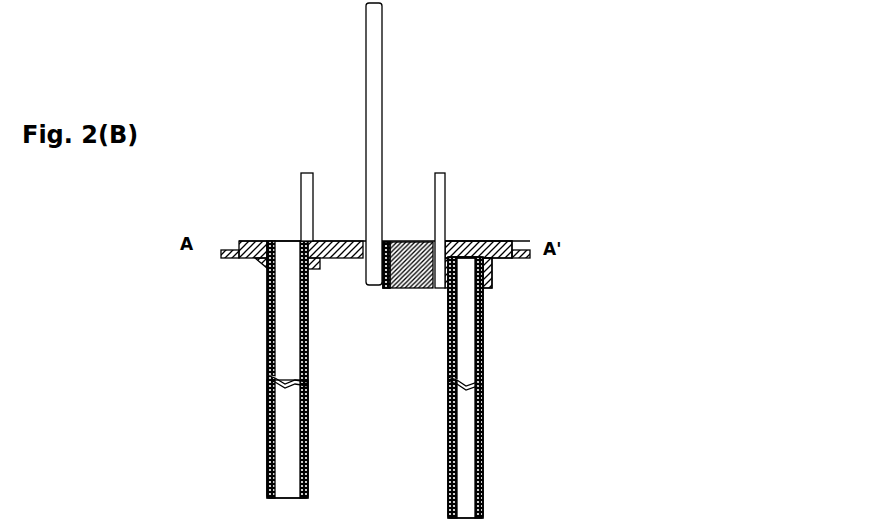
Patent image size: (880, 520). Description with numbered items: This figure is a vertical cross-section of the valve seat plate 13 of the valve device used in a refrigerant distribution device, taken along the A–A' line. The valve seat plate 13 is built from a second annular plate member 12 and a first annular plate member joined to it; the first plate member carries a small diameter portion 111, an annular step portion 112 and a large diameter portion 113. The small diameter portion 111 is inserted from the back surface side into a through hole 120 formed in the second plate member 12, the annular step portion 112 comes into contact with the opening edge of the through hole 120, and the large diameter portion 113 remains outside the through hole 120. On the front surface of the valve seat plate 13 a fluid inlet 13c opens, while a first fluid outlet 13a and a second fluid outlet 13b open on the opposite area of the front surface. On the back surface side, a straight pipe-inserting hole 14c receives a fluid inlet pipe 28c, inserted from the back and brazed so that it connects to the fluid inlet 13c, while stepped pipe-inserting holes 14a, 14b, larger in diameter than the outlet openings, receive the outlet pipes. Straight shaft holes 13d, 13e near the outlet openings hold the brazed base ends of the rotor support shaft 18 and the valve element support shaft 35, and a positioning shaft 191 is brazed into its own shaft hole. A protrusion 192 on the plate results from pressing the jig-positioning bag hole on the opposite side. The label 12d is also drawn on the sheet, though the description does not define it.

The rotor support shaft 18 is at (378, 78).
The positioning shaft 191 is at (303, 172).
The protrusion 192 is at (360, 240).
The small diameter portion 111 is at (388, 240).
The annular step portion 112 is at (388, 284).
The large diameter portion 113 is at (391, 289).
The valve element support shaft 35 is at (445, 175).
The shaft hole 13e is at (446, 241).
The first fluid outlet 13a is at (467, 242).
The second fluid outlet 13b is at (527, 203).
The through hole 120 is at (503, 242).
The second annular plate member 12 is at (492, 262).
The valve seat plate 13 is at (492, 282).
The fluid inlet 13c is at (266, 262).
The shaft hole 13d is at (362, 259).
The pipe-inserting hole 14c is at (268, 270).
The fluid inlet pipe 28c is at (268, 323).
The pipe-inserting hole 14a is at (484, 292).
The pipe-inserting hole 14b is at (541, 387).
The bottom portion 12d is at (378, 509).